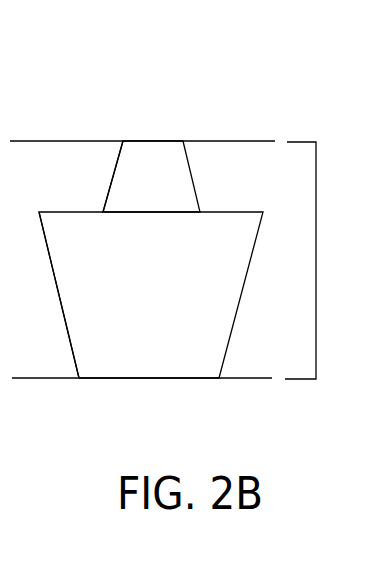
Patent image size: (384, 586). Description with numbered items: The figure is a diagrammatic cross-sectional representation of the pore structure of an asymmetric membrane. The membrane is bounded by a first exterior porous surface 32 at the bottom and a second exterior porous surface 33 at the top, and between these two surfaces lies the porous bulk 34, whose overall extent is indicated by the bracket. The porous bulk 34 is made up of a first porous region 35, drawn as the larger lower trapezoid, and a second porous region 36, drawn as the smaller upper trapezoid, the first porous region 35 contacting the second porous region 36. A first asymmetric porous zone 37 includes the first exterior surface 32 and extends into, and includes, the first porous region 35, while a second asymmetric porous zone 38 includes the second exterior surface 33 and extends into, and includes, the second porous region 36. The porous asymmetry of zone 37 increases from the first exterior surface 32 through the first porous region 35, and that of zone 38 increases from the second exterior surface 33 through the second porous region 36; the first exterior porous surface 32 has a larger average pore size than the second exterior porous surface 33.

The first exterior porous surface 32 is at (36, 382).
The second exterior porous surface 33 is at (66, 128).
The porous bulk 34 is at (316, 261).
The first porous region 35 is at (163, 298).
The second porous region 36 is at (165, 191).
The first asymmetric porous zone 37 is at (68, 332).
The second asymmetric porous zone 38 is at (112, 177).